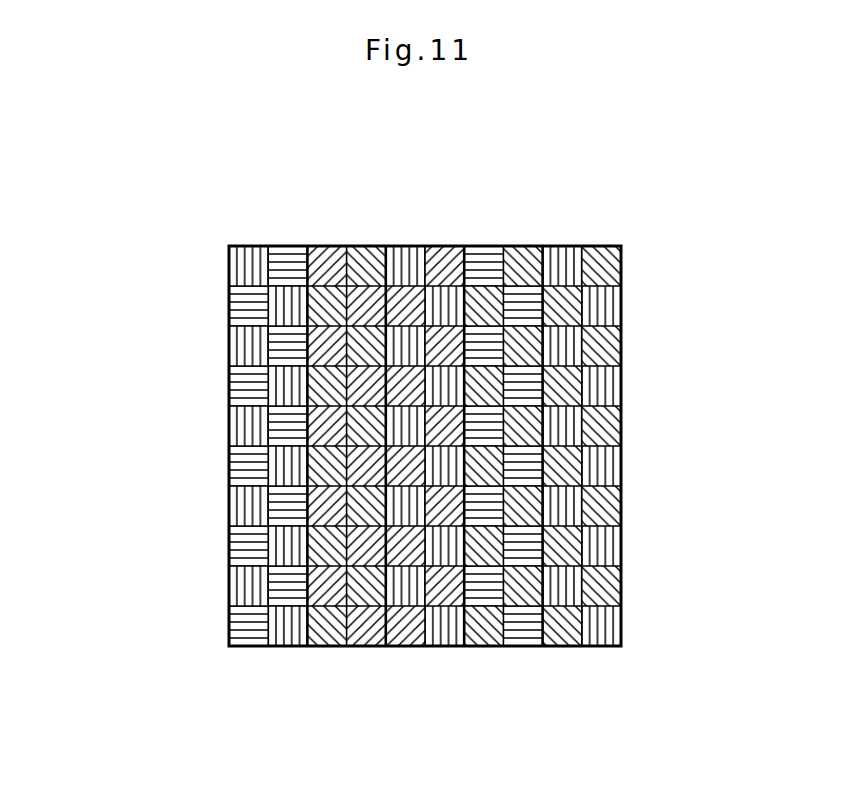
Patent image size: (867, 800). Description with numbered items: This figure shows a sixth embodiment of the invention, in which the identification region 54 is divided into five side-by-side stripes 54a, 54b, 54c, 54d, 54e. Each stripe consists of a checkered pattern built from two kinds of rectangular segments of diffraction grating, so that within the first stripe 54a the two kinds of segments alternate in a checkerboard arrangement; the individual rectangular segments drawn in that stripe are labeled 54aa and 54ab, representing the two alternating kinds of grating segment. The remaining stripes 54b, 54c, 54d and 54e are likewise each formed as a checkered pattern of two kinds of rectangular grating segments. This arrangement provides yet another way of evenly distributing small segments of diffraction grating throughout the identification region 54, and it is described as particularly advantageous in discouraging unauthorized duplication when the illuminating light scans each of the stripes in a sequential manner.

The identification region 54 is at (417, 426).
The stripe 54a is at (251, 426).
The stripe 54b is at (347, 246).
The stripe 54c is at (425, 246).
The stripe 54d is at (504, 246).
The stripe 54e is at (583, 246).
The vertically hatched sub-cells of first region 54aa is at (243, 593).
The horizontally hatched sub-cells of first region 54ab is at (292, 597).